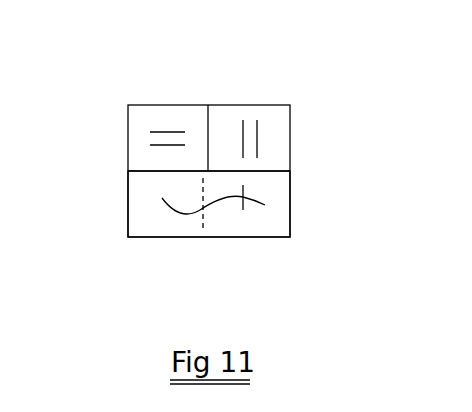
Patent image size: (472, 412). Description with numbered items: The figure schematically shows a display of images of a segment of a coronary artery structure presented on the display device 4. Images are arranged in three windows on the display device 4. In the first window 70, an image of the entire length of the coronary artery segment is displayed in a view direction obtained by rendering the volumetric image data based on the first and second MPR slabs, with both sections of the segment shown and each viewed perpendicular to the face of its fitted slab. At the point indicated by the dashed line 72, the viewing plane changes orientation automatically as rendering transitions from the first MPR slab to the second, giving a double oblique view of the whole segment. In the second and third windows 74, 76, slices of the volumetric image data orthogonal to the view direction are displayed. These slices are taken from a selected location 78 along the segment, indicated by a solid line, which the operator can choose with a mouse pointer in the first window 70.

The display device 4 is at (355, 78).
The first window 70 is at (290, 205).
The dashed line 72 is at (202, 229).
The second window 74 is at (128, 137).
The third window 76 is at (290, 140).
The selected location 78 is at (243, 205).